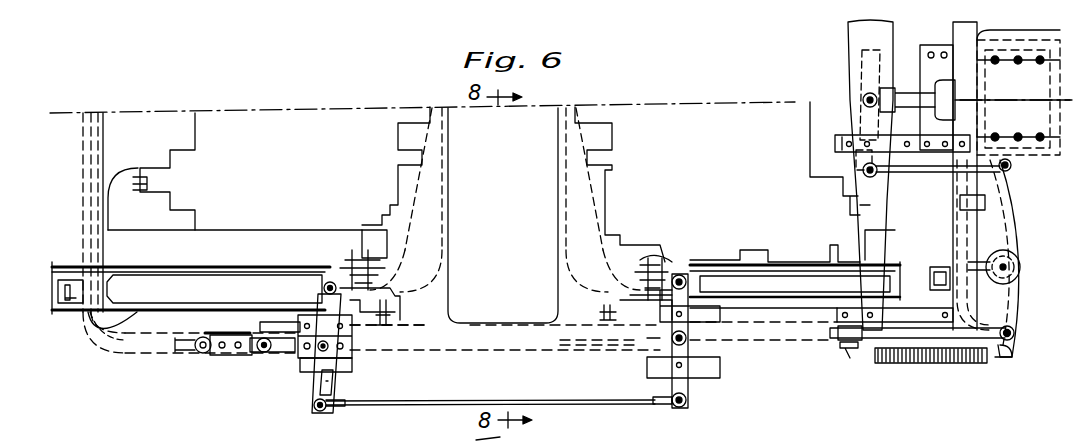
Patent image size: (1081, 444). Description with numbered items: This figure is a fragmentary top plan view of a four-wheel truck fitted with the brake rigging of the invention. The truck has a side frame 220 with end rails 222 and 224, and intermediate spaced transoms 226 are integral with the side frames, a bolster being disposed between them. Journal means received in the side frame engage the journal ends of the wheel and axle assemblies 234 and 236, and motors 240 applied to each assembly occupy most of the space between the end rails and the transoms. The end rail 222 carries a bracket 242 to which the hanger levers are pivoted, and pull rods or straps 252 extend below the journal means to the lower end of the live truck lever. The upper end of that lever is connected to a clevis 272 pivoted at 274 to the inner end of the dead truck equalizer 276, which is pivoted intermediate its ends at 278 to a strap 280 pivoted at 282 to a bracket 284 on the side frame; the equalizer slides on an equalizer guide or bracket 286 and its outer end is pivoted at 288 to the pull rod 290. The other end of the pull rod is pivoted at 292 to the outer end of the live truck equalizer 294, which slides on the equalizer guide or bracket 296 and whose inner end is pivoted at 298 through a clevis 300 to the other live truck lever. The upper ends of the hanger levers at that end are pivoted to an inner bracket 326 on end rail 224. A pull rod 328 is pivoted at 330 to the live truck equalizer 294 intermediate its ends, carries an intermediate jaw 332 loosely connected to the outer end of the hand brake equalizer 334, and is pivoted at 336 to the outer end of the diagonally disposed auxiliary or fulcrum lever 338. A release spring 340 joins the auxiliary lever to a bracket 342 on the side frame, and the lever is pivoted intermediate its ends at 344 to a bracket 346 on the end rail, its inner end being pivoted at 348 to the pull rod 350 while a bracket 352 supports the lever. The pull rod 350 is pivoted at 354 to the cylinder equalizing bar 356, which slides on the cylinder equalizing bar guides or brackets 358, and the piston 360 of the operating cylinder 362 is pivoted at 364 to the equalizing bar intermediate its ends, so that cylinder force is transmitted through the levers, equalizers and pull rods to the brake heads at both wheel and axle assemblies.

The side frame 220 is at (495, 346).
The end rail 222 is at (95, 168).
The end rail 224 is at (992, 236).
The transoms 226 is at (567, 108).
The wheel and axle assembly 234 is at (191, 288).
The wheel and axle assembly 236 is at (795, 285).
The motors 240 is at (250, 117).
The bracket 242 is at (78, 282).
The pull rods or straps 252 is at (110, 340).
The clevis 272 is at (347, 272).
The pivot 274 is at (323, 290).
The dead truck equalizer 276 is at (312, 405).
The pivot 278 is at (300, 360).
The strap 280 is at (277, 346).
The pivot 282 is at (300, 322).
The bracket 284 is at (208, 357).
The equalizer guide or bracket 286 is at (312, 395).
The pivot 288 is at (320, 412).
The pull rod 290 is at (405, 408).
The pivot 292 is at (684, 405).
The live truck equalizer 294 is at (690, 392).
The equalizer guide or bracket 296 is at (722, 368).
The pivot 298 is at (692, 262).
The clevis 300 is at (660, 270).
The inner bracket 326 is at (952, 285).
The pull rod 328 is at (778, 335).
The pivot 330 is at (650, 345).
The intermediate jaw 332 is at (848, 350).
The hand brake equalizer 334 is at (888, 30).
The pivot 336 is at (1014, 336).
The auxiliary or fulcrum lever 338 is at (1000, 318).
The release spring 340 is at (972, 364).
The bracket 342 is at (838, 342).
The pivot 344 is at (1015, 262).
The bracket 346 is at (980, 262).
The pivot 348 is at (1012, 166).
The pull rod 350 is at (920, 175).
The bracket 352 is at (962, 205).
The pivot 354 is at (862, 172).
The cylinder equalizing bar 356 is at (860, 60).
The cylinder equalizing bar guides or brackets 358 is at (835, 145).
The piston 360 is at (912, 95).
The operating cylinder 362 is at (1022, 80).
The pivot 364 is at (862, 100).